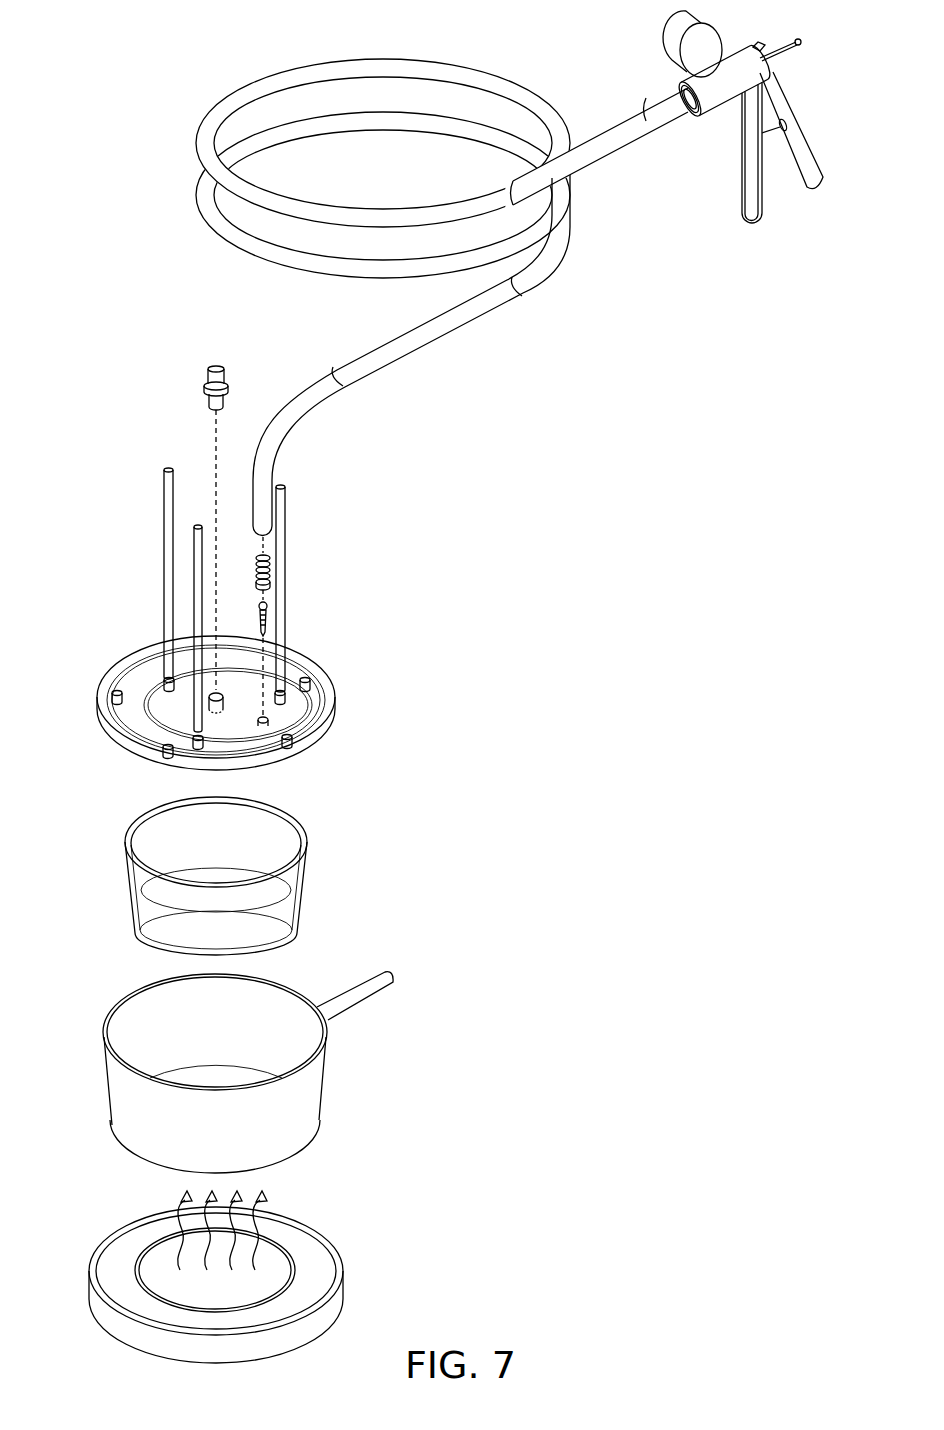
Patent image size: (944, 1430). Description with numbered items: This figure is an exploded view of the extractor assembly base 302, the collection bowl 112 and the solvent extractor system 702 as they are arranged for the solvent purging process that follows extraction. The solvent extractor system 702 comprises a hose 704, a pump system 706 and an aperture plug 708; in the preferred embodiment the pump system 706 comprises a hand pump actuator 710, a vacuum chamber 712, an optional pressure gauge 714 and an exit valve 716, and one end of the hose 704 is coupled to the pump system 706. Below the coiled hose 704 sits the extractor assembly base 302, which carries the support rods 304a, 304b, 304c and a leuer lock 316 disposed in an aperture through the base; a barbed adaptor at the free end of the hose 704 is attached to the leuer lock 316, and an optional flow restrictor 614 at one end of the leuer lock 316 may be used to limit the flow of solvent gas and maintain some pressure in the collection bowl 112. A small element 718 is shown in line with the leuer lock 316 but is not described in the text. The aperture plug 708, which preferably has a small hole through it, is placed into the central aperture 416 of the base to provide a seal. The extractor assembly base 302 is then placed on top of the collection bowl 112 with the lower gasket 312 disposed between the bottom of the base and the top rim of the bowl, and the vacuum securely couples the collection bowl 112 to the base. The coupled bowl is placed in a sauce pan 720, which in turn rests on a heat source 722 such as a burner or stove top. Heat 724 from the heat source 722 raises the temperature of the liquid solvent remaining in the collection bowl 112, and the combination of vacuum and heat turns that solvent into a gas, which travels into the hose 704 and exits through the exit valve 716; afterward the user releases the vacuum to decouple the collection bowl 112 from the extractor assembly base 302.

The solvent extractor system 702 is at (88, 130).
The hose 704 is at (386, 357).
The pump system 706 is at (821, 103).
The aperture plug 708 is at (213, 367).
The hand pump actuator 710 is at (750, 212).
The vacuum chamber 712 is at (711, 101).
The pressure gauge 714 is at (668, 31).
The exit valve 716 is at (793, 43).
The spring 718 is at (271, 576).
The flow restrictor 614 is at (269, 619).
The aperture 416 is at (223, 696).
The leuer lock 316 is at (268, 721).
The lower gasket 312 is at (138, 677).
The extractor assembly base 302 is at (336, 706).
The support rod 304a is at (162, 508).
The support rod 304b is at (287, 506).
The support rod 304c is at (192, 600).
The collection bowl 112 is at (304, 876).
The sauce pan 720 is at (328, 1078).
The heat source 722 is at (344, 1284).
The heat 724 is at (128, 1199).